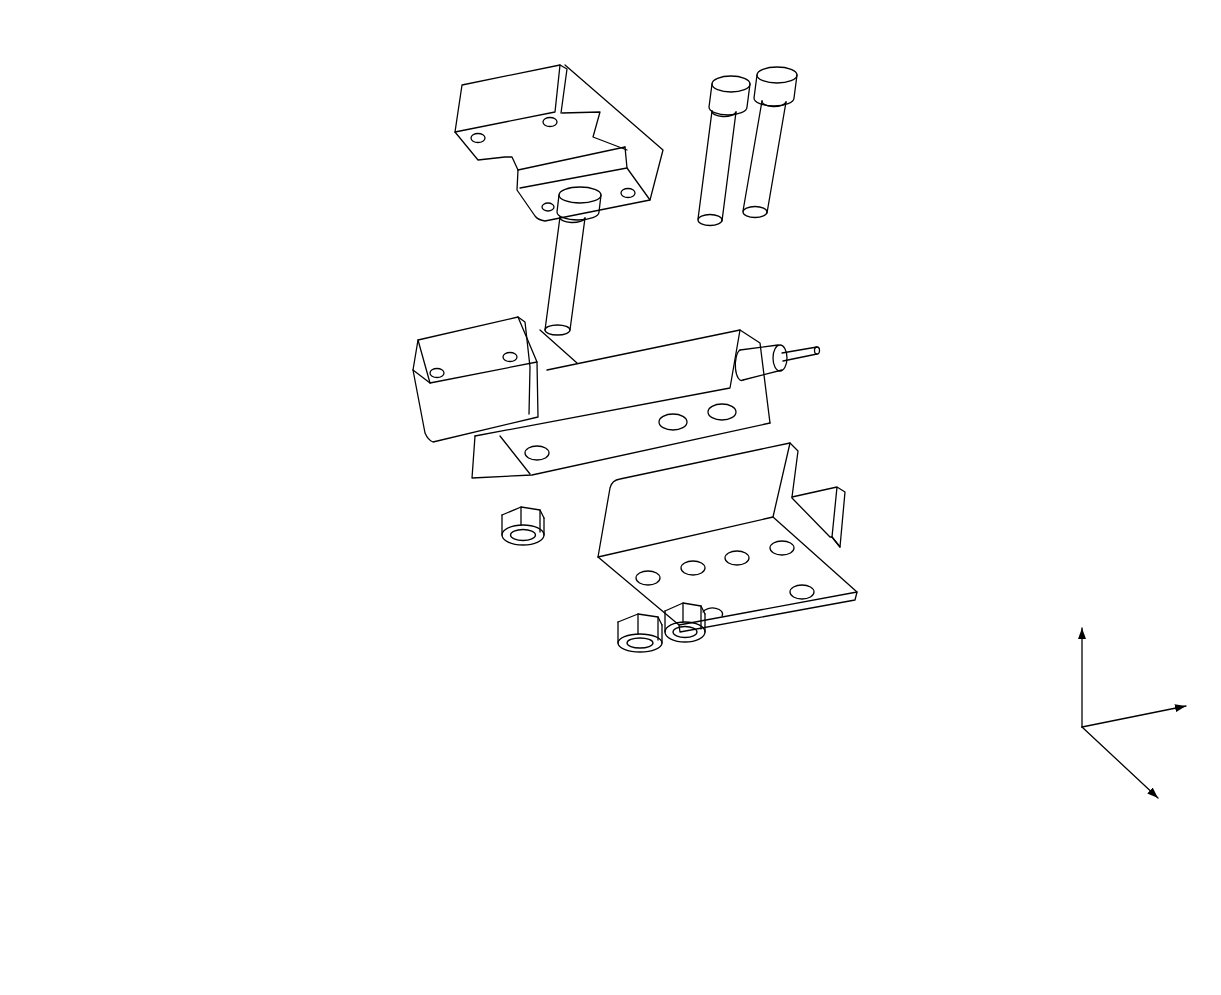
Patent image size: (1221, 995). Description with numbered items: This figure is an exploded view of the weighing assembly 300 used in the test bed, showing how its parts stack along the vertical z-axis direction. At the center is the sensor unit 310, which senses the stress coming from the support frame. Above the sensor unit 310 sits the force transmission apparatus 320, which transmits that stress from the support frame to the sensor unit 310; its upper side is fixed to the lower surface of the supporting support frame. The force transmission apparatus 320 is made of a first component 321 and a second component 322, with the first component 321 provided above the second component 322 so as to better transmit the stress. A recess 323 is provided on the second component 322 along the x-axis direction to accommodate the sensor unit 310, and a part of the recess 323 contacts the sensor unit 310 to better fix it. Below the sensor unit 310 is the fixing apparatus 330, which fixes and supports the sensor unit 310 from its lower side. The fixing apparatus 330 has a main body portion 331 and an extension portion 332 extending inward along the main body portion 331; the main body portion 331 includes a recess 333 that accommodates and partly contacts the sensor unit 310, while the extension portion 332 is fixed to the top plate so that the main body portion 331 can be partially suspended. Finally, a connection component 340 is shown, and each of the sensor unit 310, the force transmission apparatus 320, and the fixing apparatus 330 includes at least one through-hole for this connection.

The weighing assembly 300 is at (253, 80).
The sensor unit 310 is at (722, 345).
The force transmission apparatus 320 is at (408, 213).
The first component 321 is at (583, 102).
The second component 322 is at (432, 412).
The recess 323 is at (458, 456).
The fixing apparatus 330 is at (960, 505).
The main body portion 331 is at (623, 565).
The extension portion 332 is at (848, 570).
The recess 333 is at (813, 478).
The connection component 340 is at (792, 167).